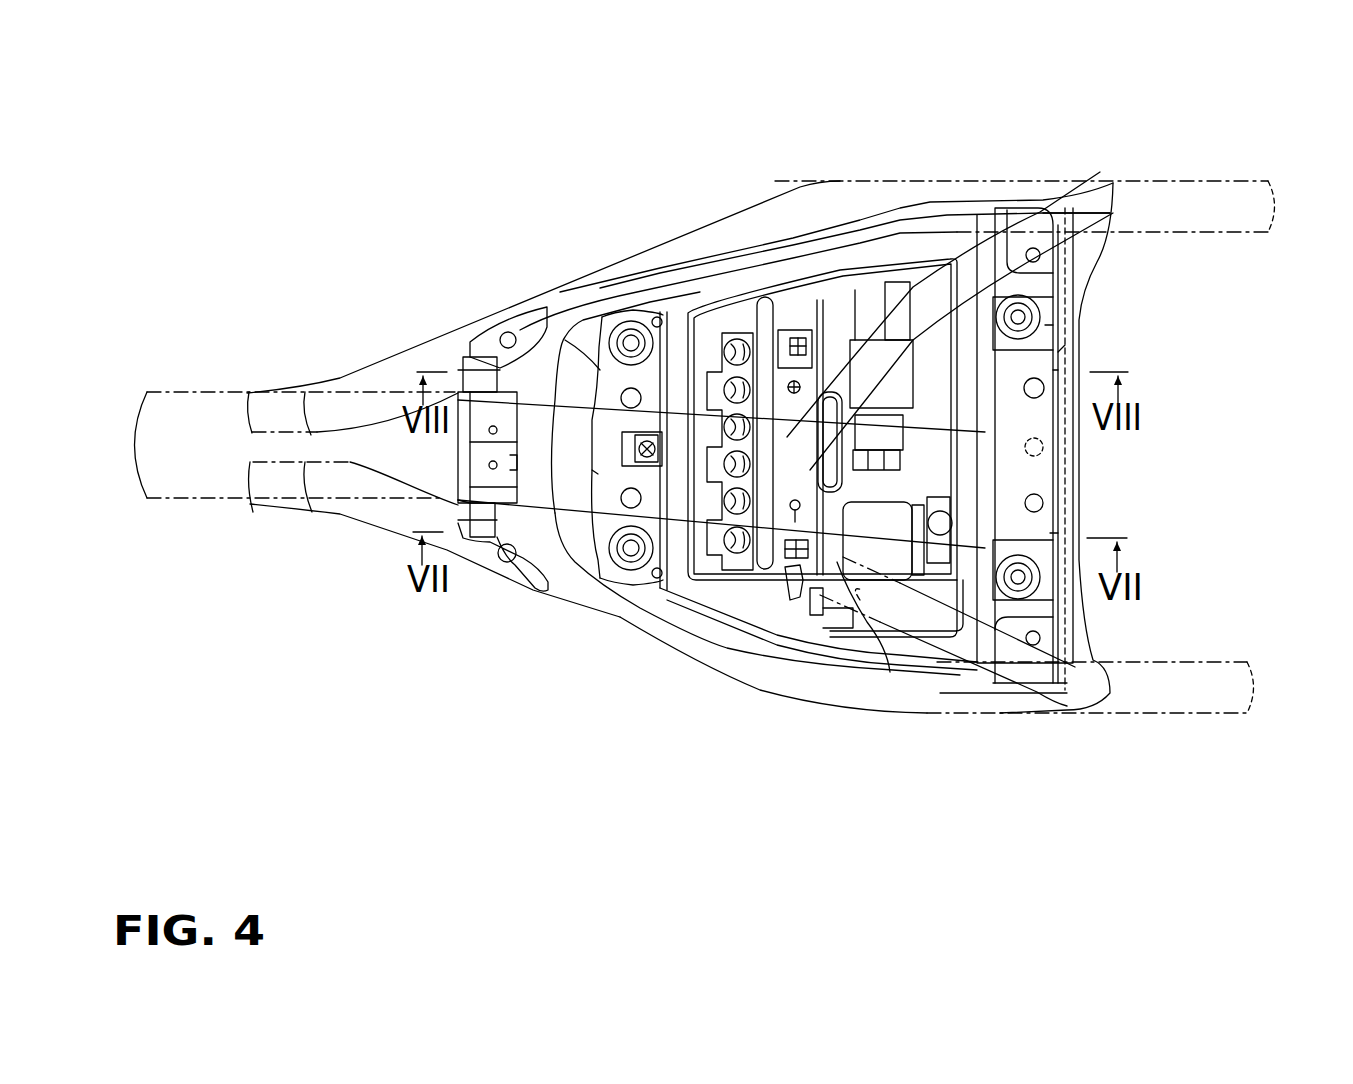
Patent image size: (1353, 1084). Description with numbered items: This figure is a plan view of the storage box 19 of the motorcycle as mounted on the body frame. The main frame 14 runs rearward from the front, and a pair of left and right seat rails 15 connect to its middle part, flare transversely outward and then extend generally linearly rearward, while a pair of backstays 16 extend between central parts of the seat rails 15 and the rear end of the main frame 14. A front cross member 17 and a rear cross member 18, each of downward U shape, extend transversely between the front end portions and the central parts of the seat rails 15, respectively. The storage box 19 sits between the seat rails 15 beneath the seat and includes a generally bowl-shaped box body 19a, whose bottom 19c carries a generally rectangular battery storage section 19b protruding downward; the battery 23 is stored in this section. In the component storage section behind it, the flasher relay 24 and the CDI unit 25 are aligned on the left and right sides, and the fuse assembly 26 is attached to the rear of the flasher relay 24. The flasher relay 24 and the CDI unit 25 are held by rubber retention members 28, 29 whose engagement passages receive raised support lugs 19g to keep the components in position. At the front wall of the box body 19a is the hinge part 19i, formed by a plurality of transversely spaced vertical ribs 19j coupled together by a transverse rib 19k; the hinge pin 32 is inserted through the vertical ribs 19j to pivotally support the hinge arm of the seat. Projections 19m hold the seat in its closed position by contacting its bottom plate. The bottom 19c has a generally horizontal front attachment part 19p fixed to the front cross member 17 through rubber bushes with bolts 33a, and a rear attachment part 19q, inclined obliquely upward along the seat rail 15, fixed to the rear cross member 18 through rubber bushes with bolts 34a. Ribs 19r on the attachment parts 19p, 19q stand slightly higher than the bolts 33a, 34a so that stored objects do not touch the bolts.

The main frame 14 is at (178, 385).
The seat rail 15 is at (1162, 178).
The backstay 16 is at (957, 253).
The front cross member 17 is at (565, 335).
The rear cross member 18 is at (1068, 352).
The storage box 19 is at (737, 648).
The box body 19a is at (890, 672).
The battery storage section 19b is at (800, 585).
The bottom 19c is at (687, 300).
The support lug 19g is at (930, 497).
The hinge part 19i is at (455, 472).
The vertical rib 19j is at (508, 465).
The transverse rib 19k is at (455, 468).
The projection 19m is at (507, 333).
The front attachment part 19p is at (598, 470).
The rear attachment part 19q is at (1045, 325).
The rib 19r is at (1055, 370).
The battery 23 is at (732, 310).
The flasher relay 24 is at (860, 600).
The CDI unit 25 is at (855, 290).
The fuse assembly 26 is at (1030, 433).
The rubber retention member 28 is at (918, 342).
The rubber retention member 29 is at (843, 547).
The hinge pin 32 is at (470, 335).
The bolt 33a is at (630, 325).
The bolt 34a is at (1060, 343).